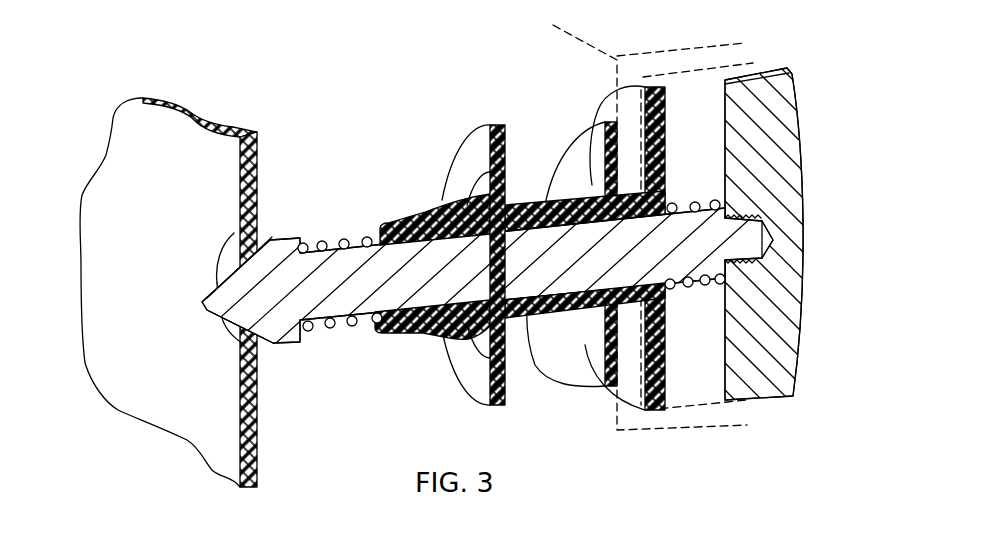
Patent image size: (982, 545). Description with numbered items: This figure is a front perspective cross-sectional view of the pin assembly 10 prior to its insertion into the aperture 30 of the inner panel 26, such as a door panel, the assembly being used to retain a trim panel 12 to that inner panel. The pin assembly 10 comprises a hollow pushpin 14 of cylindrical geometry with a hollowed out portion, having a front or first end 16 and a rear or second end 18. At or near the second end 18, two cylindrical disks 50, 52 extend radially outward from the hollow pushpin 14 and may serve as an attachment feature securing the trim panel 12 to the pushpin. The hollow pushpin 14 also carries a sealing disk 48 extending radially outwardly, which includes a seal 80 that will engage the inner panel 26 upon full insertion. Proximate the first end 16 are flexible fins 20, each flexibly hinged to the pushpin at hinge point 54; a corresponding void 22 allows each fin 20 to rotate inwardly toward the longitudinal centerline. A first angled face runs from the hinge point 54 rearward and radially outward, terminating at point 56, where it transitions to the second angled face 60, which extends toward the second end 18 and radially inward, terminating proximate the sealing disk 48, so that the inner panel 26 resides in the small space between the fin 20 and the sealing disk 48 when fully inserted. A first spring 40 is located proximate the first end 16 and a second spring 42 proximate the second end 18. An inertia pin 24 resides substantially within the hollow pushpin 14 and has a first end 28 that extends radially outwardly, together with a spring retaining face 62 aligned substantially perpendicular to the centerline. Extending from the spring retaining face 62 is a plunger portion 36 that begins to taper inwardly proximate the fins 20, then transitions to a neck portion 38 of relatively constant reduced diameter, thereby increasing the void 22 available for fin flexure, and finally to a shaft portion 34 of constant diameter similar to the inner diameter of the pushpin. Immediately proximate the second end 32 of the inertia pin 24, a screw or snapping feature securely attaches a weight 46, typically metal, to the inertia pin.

The pin assembly 10 is at (491, 99).
The trim panel 12 is at (696, 47).
The hollow pushpin 14 is at (577, 203).
The first end 16 is at (367, 233).
The second end 18 is at (667, 110).
The flexible fin 20 is at (388, 219).
The void 22 is at (475, 217).
The inertia pin 24 is at (600, 170).
The inner panel 26 is at (133, 138).
The first end 28 is at (200, 302).
The aperture 30 is at (240, 343).
The second end 32 is at (770, 233).
The shaft portion 34 is at (543, 273).
The plunger portion 36 is at (357, 292).
The neck portion 38 is at (513, 320).
The first spring 40 is at (333, 330).
The second spring 42 is at (700, 200).
The weight 46 is at (780, 328).
The sealing disk 48 is at (503, 398).
The cylindrical disk 50 is at (598, 357).
The cylindrical disk 52 is at (667, 363).
The hinge point 54 is at (407, 220).
The point 56 is at (480, 172).
The second angled face 60 is at (503, 183).
The spring retaining face 62 is at (312, 342).
The seal 80 is at (455, 145).